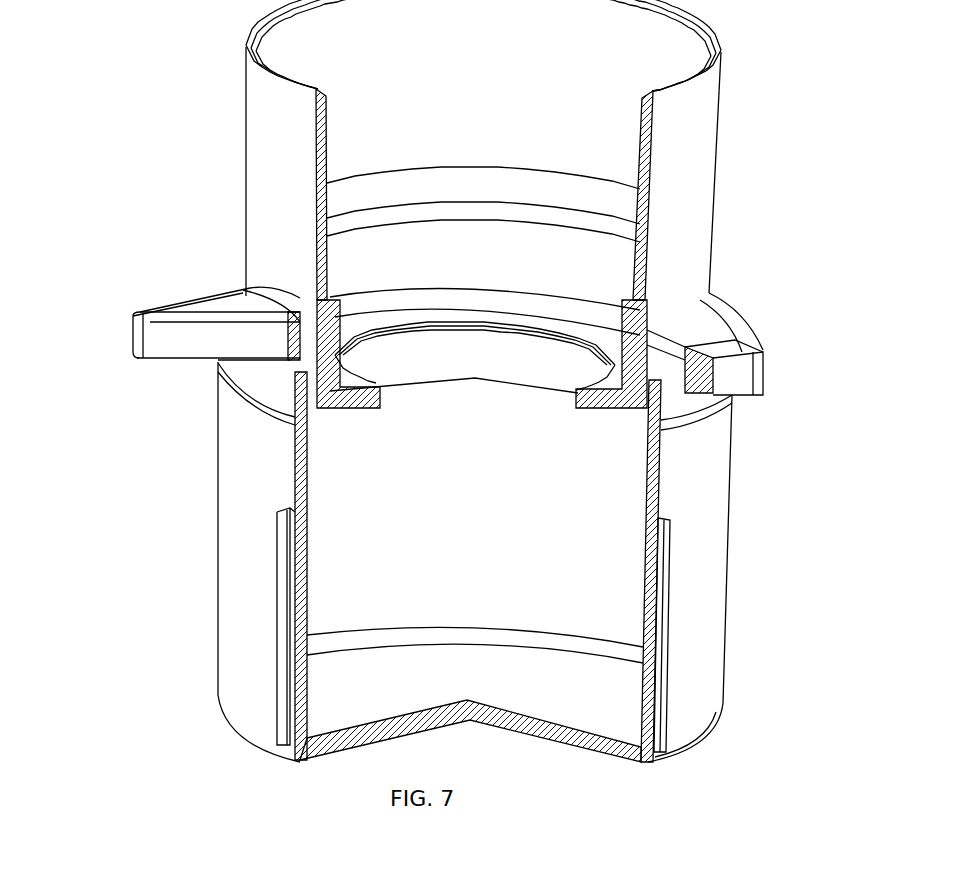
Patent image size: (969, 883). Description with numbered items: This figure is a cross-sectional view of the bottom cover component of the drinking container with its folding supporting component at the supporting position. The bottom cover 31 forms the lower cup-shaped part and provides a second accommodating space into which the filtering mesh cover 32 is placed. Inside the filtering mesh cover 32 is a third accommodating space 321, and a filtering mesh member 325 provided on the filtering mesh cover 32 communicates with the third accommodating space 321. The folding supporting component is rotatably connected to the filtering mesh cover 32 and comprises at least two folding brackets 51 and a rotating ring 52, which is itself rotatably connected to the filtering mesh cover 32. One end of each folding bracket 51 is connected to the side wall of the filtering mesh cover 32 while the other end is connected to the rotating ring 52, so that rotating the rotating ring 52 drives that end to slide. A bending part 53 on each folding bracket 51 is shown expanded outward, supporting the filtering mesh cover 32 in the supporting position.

The bottom cover 31 is at (222, 522).
The filtering mesh cover 32 is at (258, 188).
The third accommodating space 321 is at (385, 135).
The filtering mesh member 325 is at (597, 371).
The folding bracket 51 is at (243, 300).
The rotating ring 52 is at (258, 392).
The bending part 53 is at (137, 333).